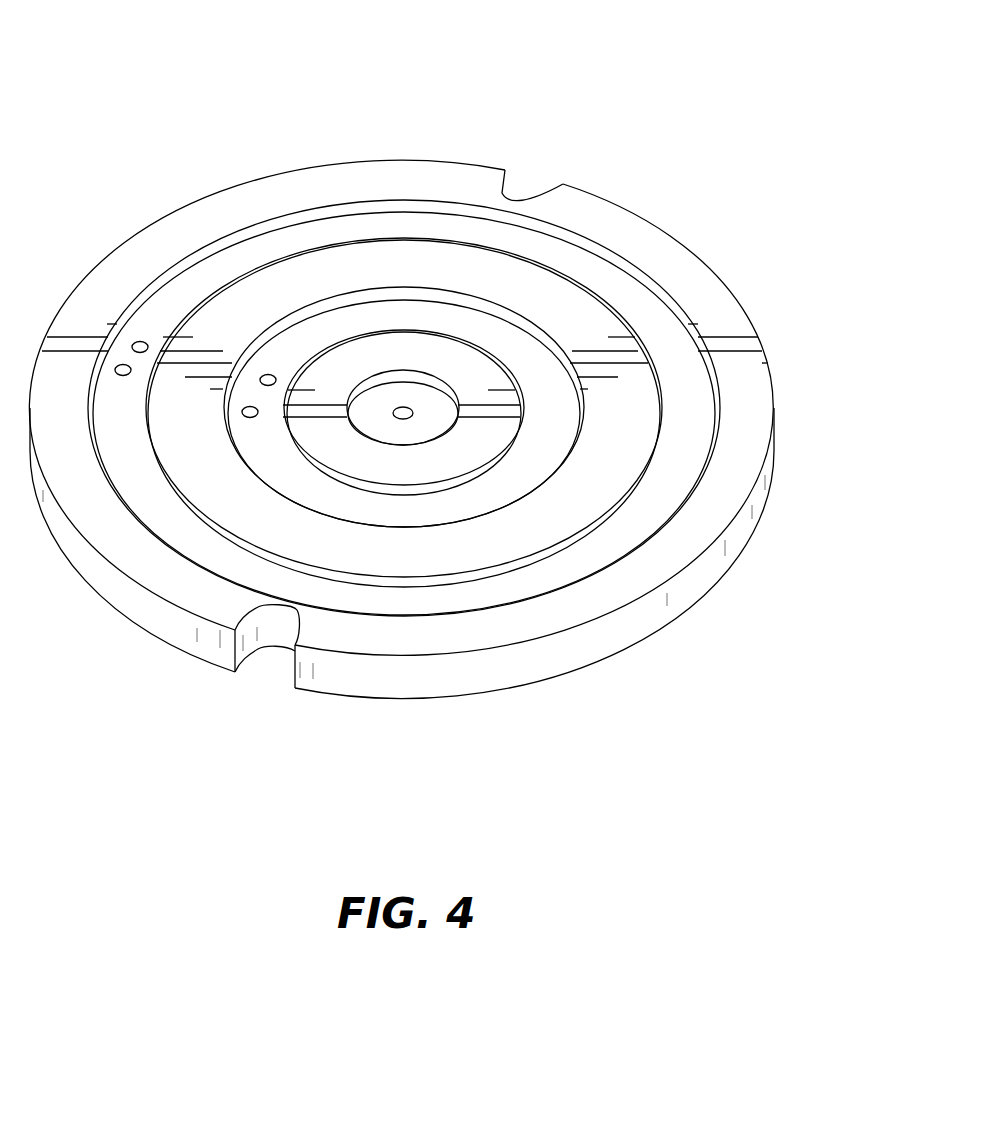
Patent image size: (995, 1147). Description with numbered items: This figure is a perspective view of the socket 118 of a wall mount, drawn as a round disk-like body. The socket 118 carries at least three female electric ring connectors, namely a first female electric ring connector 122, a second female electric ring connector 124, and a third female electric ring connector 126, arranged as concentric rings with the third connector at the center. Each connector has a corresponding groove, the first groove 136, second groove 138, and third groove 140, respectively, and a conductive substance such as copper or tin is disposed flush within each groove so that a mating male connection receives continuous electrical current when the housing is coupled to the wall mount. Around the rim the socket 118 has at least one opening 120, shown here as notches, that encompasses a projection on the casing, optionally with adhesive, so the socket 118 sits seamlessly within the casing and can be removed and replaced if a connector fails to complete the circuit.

The socket 118 is at (152, 61).
The opening 120 is at (515, 200).
The first female electric ring connector 122 is at (132, 358).
The second female electric ring connector 124 is at (257, 397).
The third female electric ring connector 126 is at (403, 412).
The first groove 136 is at (655, 323).
The second groove 138 is at (555, 414).
The third groove 140 is at (367, 400).